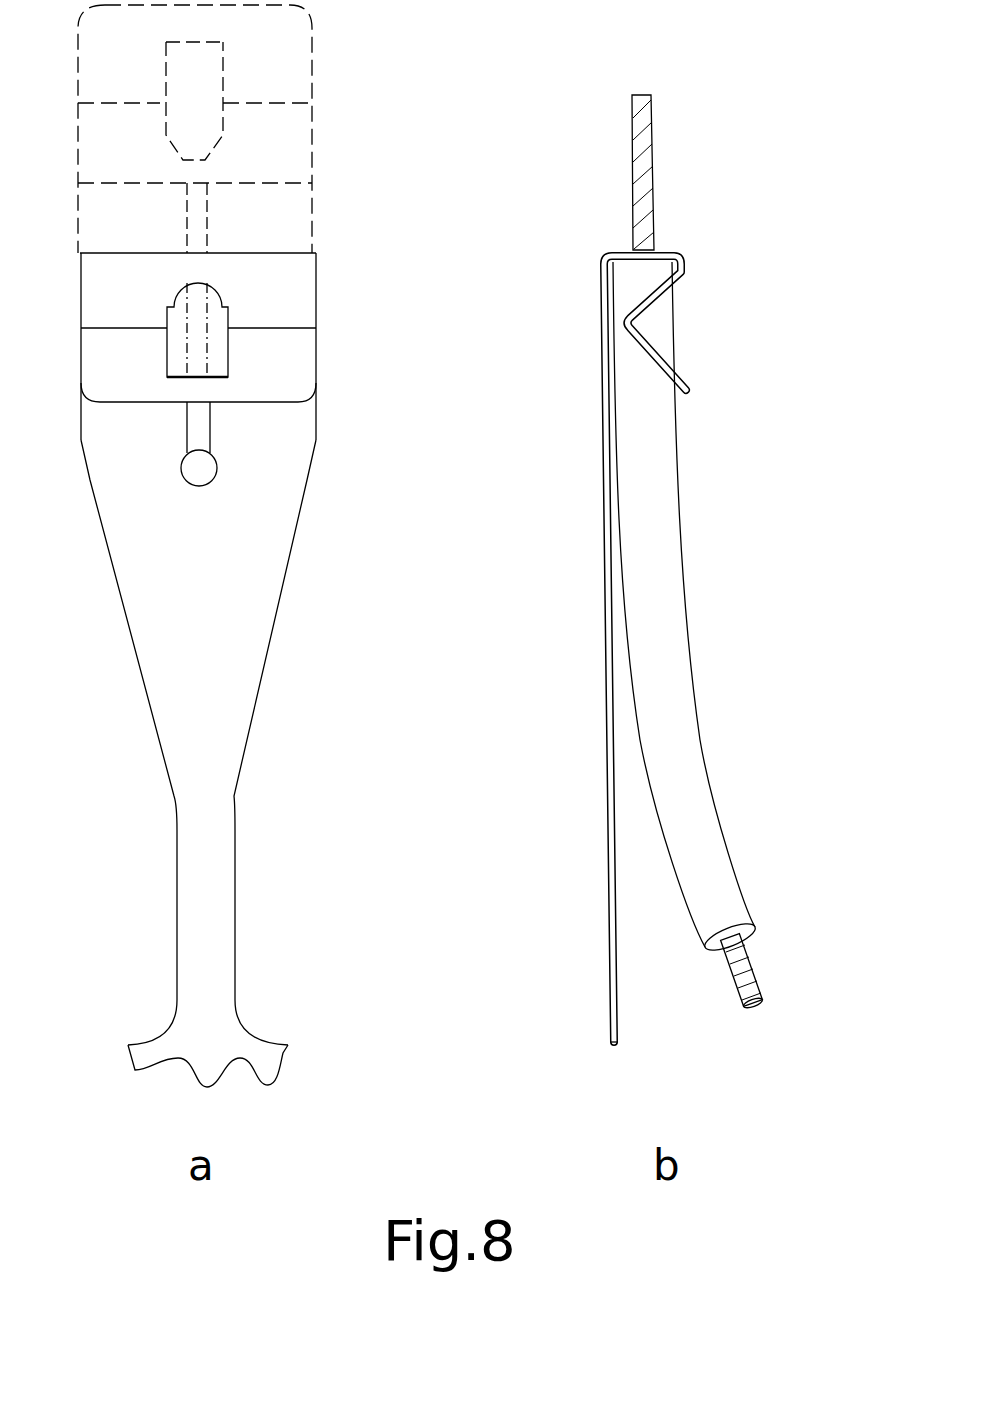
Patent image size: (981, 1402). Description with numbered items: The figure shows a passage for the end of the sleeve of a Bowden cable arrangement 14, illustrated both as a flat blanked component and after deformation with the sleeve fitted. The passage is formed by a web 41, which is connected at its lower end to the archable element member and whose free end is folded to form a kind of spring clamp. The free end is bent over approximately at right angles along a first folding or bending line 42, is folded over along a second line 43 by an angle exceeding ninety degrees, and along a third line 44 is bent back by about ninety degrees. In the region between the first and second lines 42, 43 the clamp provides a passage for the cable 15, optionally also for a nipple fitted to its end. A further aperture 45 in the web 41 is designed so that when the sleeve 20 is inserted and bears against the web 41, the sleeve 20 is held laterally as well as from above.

The Bowden cable arrangement 14 is at (660, 837).
The cable 15 is at (647, 138).
The sleeve 20 is at (638, 598).
The web 41 is at (211, 700).
The first folding or bending line 42 is at (316, 253).
The second line 43 is at (313, 183).
The third line 44 is at (313, 103).
The further aperture 45 is at (220, 352).